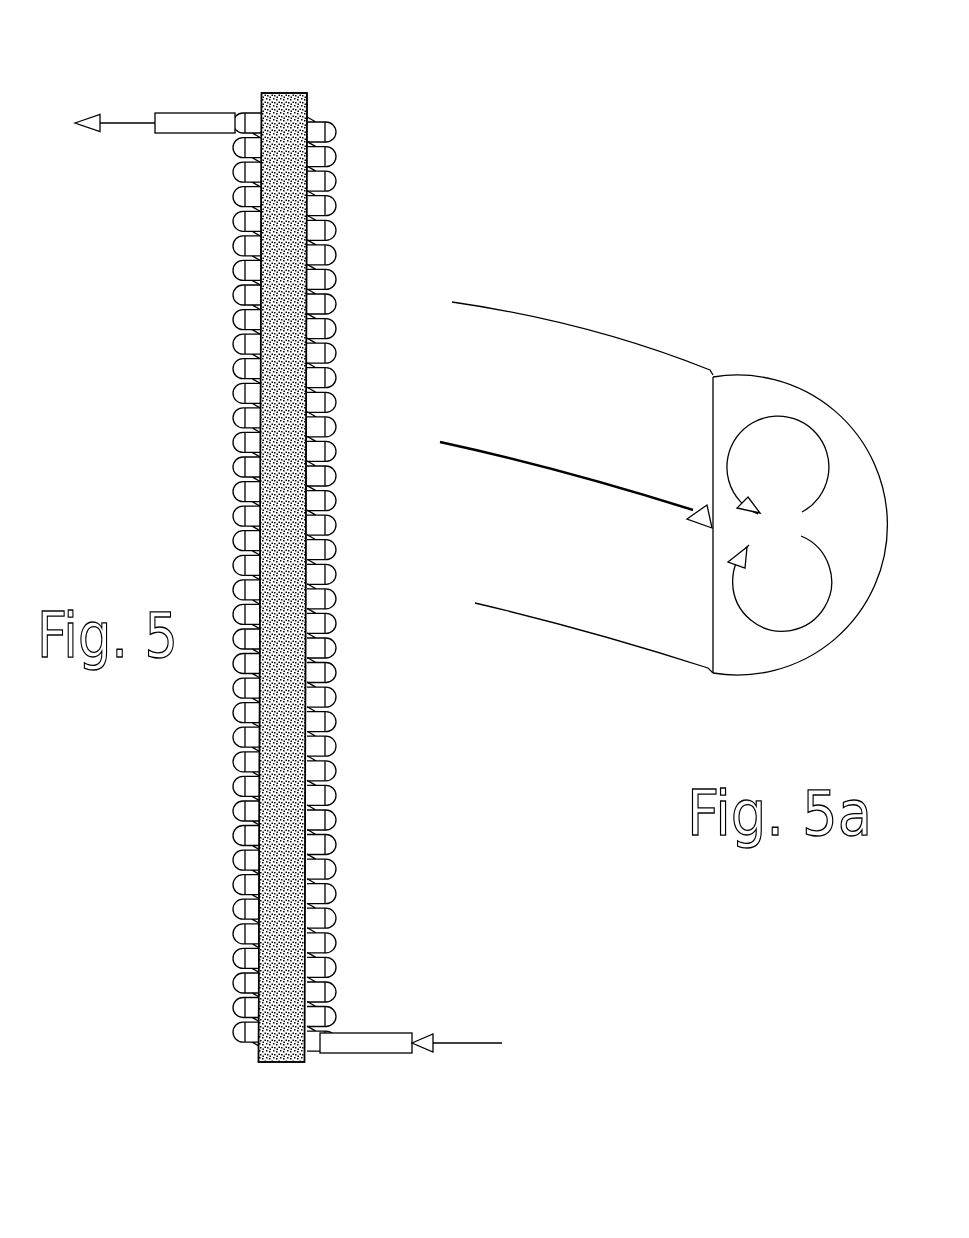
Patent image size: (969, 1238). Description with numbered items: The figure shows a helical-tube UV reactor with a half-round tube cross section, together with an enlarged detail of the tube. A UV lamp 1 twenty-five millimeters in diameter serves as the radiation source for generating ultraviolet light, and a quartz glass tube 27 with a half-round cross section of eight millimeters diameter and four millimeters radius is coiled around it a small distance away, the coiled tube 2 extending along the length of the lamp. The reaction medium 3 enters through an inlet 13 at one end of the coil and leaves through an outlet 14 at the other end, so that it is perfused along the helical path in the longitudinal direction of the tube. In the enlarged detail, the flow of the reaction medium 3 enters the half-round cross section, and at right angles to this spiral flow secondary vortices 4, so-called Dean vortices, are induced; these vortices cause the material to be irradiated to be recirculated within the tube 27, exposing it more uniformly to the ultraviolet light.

In FIG. 5, the UV lamp 1 is at (308, 100).
In FIG. 5, the inner tube 2 is at (343, 579).
In FIG. 5a, the reaction medium 3 is at (518, 459).
In FIG. 5a, the secondary vortices 4 is at (788, 417).
In FIG. 5, the inlet 13 is at (390, 1033).
In FIG. 5, the outlet 14 is at (197, 117).
In FIG. 5, the quartz glass tube 27 is at (333, 698).